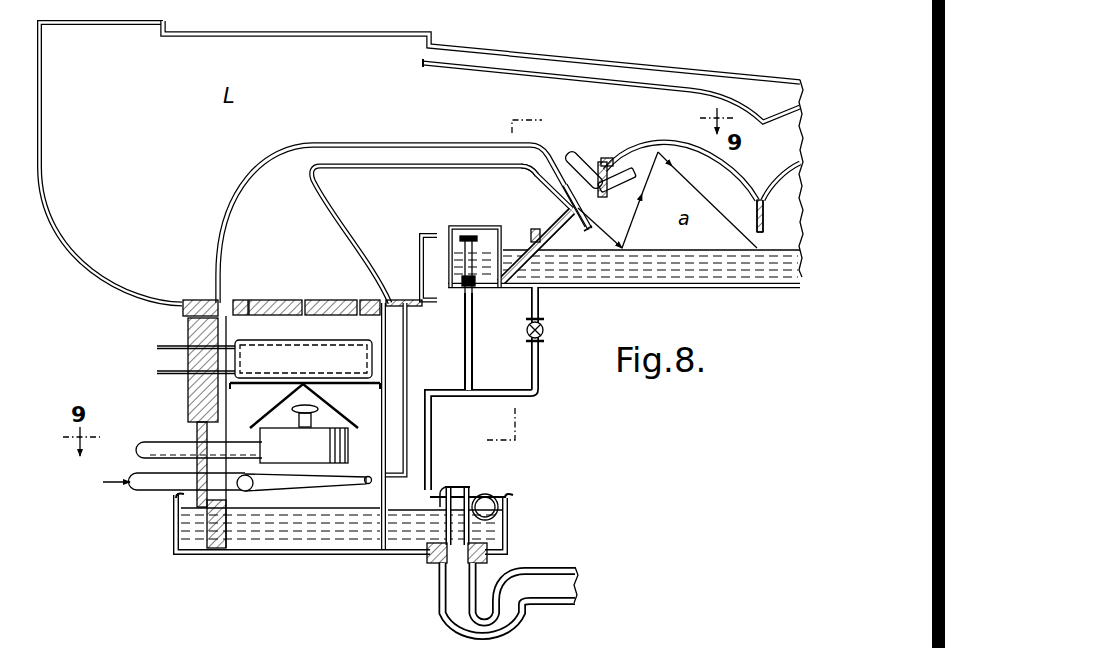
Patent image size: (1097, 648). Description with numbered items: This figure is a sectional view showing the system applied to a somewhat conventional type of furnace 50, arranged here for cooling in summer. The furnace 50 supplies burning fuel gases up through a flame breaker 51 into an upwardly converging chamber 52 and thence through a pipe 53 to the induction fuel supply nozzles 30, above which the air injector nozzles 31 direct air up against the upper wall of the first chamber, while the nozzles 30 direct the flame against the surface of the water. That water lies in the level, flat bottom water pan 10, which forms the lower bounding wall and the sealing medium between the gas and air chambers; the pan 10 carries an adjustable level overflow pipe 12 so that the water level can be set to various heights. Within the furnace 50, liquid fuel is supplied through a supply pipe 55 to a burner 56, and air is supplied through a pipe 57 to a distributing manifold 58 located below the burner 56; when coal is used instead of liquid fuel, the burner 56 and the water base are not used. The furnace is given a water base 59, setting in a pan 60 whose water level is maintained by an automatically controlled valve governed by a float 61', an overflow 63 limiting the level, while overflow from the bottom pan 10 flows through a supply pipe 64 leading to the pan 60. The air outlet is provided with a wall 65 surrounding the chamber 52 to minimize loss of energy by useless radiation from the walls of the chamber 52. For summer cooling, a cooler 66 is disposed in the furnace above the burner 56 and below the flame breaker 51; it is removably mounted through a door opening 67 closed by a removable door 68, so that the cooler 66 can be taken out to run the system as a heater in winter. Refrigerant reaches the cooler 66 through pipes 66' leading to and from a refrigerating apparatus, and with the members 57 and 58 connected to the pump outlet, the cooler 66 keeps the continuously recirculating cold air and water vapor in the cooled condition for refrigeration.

The bottom water pan 10 is at (590, 288).
The adjustable level overflow pipe 12 is at (469, 236).
The fuel supply nozzle 30 is at (596, 215).
The air injector nozzle 31 is at (628, 192).
The furnace 50 is at (409, 360).
The flame breaker 51 is at (277, 300).
The upwardly converging chamber 52 is at (303, 232).
The pipe 53 is at (442, 143).
The supply pipe 55 is at (160, 445).
The burner 56 is at (348, 447).
The air supply pipe 57 is at (150, 492).
The distributing manifold 58 is at (366, 484).
The water base 59 is at (327, 555).
The pan 60 is at (509, 527).
The float 61' is at (498, 492).
The overflow 63 is at (442, 485).
The supply pipe 64 is at (428, 427).
The wall 65 is at (62, 228).
The cooler 66 is at (305, 354).
The refrigerant pipes 66' is at (171, 359).
The door opening 67 is at (227, 340).
The removable door 68 is at (188, 387).